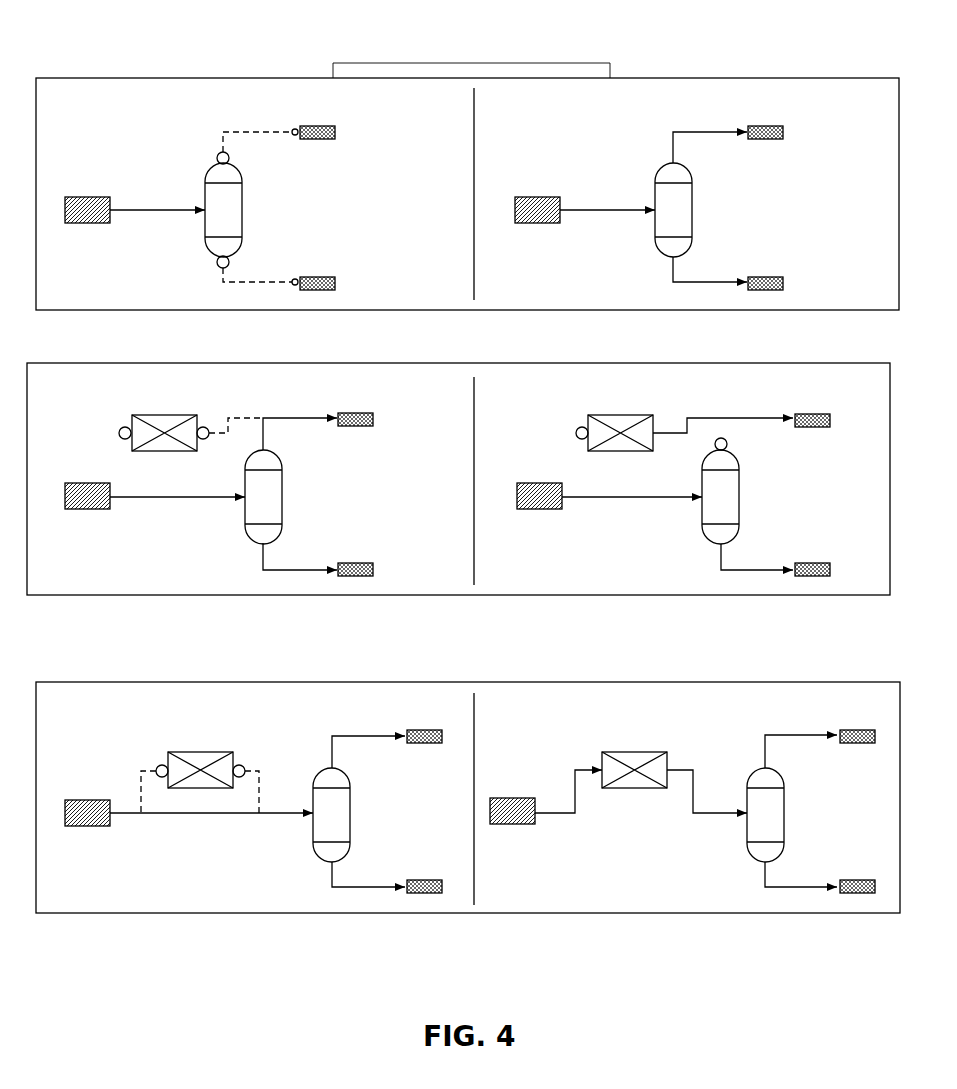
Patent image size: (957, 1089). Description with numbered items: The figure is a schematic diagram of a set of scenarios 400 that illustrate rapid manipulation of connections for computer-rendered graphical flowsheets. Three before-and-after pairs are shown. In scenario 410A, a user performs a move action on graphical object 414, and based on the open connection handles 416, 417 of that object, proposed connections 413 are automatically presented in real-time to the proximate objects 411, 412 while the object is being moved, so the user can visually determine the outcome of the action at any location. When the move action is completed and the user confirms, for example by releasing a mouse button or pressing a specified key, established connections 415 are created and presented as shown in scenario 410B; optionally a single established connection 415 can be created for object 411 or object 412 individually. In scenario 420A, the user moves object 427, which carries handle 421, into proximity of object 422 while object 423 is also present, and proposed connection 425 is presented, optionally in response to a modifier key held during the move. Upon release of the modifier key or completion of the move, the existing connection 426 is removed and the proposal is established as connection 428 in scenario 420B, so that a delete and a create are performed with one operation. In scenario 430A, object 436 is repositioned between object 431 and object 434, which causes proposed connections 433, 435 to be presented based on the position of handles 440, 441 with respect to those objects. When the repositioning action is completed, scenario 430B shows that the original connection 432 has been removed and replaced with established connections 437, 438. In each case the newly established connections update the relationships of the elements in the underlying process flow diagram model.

The set of scenarios 400 is at (463, 468).
The scenario 410A is at (172, 188).
The scenario 410B is at (618, 182).
The scenario 420A is at (191, 470).
The scenario 420B is at (640, 470).
The scenario 430A is at (242, 790).
The scenario 430B is at (682, 790).
The object 411 is at (333, 139).
The object 412 is at (333, 277).
The proposed connections 413 is at (267, 281).
The graphical object 414 is at (205, 195).
The established connections 415 is at (718, 282).
The open connection handle 416 is at (216, 265).
The open connection handle 417 is at (218, 153).
The handle 421 is at (207, 440).
The object 422 is at (373, 426).
The object 423 is at (355, 563).
The proposed connection 425 is at (228, 418).
The connection 426 is at (300, 421).
The object 427 is at (150, 415).
The established connection 428 is at (687, 418).
The object 431 is at (83, 223).
The connection 432 is at (208, 815).
The proposed connection 433 is at (140, 790).
The object 434 is at (245, 530).
The proposed connection 435 is at (263, 773).
The object 436 is at (200, 752).
The established connection 437 is at (575, 790).
The established connection 438 is at (695, 775).
The handle 440 is at (158, 765).
The handle 441 is at (241, 765).